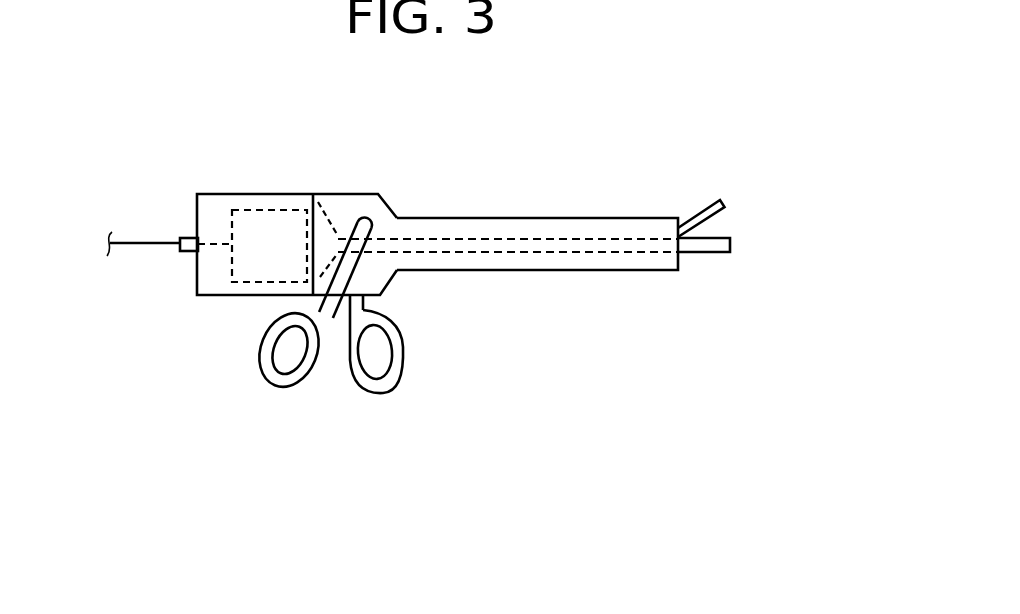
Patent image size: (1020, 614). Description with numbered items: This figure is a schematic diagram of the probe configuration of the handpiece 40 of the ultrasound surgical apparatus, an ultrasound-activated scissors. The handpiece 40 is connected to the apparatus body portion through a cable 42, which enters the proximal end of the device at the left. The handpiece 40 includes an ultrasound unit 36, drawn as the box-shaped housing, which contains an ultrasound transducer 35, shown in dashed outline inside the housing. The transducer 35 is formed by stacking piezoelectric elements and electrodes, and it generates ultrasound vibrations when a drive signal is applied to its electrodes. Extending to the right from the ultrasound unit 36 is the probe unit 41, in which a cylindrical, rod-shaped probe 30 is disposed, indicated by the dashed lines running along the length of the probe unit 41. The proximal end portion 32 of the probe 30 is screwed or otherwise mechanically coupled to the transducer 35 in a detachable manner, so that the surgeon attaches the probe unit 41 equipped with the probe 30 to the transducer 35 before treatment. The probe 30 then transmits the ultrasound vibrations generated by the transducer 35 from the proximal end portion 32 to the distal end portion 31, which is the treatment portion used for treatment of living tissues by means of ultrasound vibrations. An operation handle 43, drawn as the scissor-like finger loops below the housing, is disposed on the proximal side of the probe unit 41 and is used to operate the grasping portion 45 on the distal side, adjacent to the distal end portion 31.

The handpiece 40 is at (597, 135).
The ultrasound unit 36 is at (253, 194).
The probe unit 41 is at (508, 218).
The probe 30 is at (472, 235).
The proximal end portion 32 is at (343, 233).
The ultrasound transducer 35 is at (232, 275).
The cable 42 is at (123, 243).
The operation handle 43 is at (400, 345).
The distal end portion 31 is at (705, 253).
The grasping portion 45 is at (712, 203).